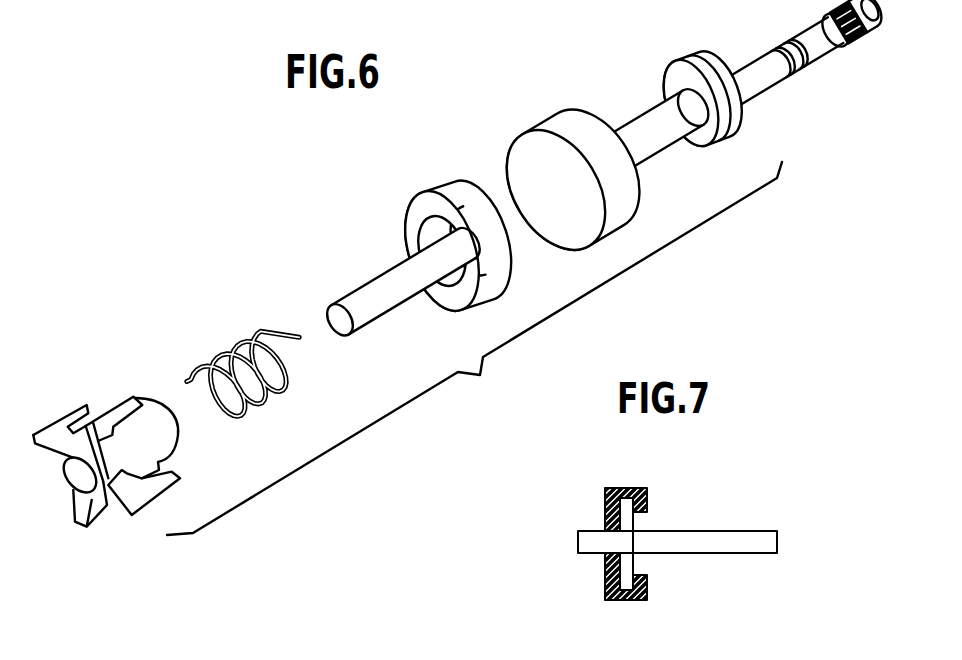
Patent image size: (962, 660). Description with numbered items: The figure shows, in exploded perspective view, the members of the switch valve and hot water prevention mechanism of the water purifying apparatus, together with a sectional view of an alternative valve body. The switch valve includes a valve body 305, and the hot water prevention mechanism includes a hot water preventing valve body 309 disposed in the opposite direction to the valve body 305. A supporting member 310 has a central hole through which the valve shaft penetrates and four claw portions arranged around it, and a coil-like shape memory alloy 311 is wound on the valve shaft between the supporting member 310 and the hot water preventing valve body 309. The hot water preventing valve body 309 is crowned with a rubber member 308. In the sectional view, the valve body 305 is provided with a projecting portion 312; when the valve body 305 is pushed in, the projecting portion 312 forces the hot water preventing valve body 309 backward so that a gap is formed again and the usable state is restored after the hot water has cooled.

In FIG. 6, the valve body 305 is at (546, 128).
In FIG. 7, the valve body 305 is at (674, 510).
In FIG. 7, the rubber member 308 is at (623, 490).
In FIG. 6, the hot water preventing valve body 309 is at (441, 194).
In FIG. 6, the supporting member 310 is at (110, 414).
In FIG. 6, the coil-like shape memory alloy 311 is at (230, 352).
In FIG. 7, the projecting portion 312 is at (587, 535).